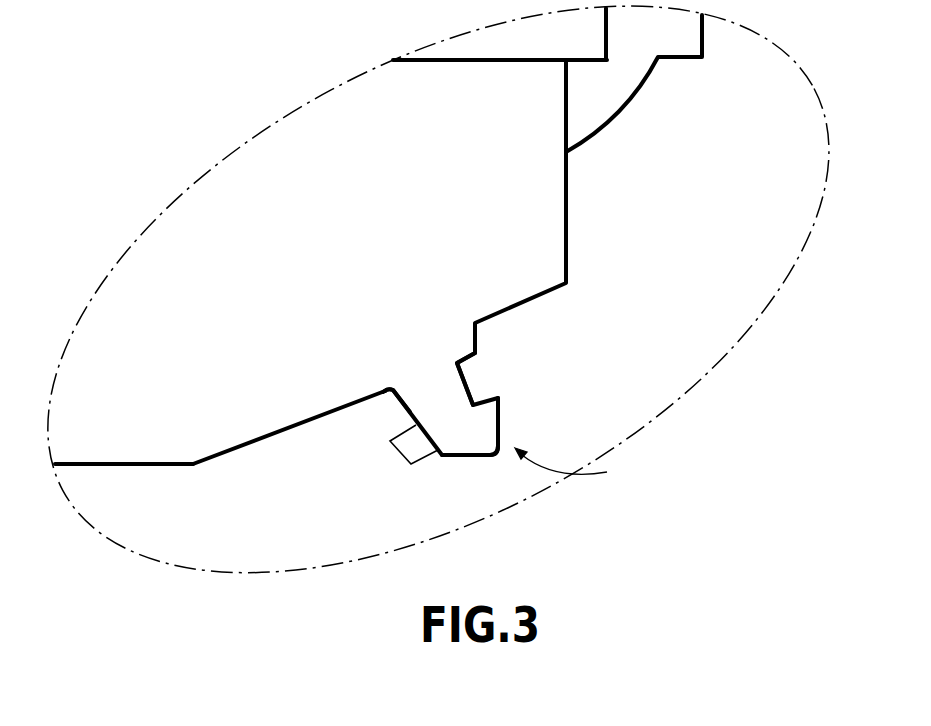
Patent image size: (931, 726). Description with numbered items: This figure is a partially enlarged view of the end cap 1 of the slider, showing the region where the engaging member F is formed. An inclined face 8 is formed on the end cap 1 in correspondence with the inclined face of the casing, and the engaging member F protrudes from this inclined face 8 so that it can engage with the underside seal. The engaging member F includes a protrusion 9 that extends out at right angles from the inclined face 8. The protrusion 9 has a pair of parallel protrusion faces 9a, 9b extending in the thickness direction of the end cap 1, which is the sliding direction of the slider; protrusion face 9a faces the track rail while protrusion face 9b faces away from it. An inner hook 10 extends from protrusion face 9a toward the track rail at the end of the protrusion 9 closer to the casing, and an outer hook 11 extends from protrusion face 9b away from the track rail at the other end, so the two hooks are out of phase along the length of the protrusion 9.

The end cap 1 is at (115, 449).
The inclined face 8 is at (282, 430).
The protrusion 9 is at (428, 387).
The protrusion face 9a is at (463, 380).
The protrusion face 9b is at (407, 408).
The inner hook 10 is at (485, 425).
The outer hook 11 is at (412, 452).
The engaging member F is at (571, 467).